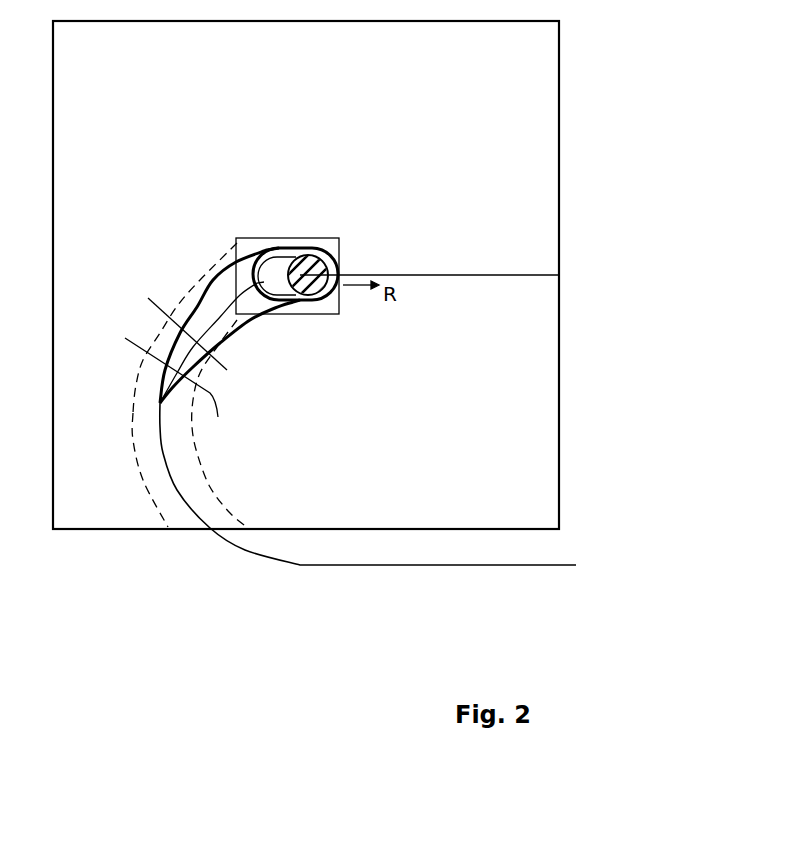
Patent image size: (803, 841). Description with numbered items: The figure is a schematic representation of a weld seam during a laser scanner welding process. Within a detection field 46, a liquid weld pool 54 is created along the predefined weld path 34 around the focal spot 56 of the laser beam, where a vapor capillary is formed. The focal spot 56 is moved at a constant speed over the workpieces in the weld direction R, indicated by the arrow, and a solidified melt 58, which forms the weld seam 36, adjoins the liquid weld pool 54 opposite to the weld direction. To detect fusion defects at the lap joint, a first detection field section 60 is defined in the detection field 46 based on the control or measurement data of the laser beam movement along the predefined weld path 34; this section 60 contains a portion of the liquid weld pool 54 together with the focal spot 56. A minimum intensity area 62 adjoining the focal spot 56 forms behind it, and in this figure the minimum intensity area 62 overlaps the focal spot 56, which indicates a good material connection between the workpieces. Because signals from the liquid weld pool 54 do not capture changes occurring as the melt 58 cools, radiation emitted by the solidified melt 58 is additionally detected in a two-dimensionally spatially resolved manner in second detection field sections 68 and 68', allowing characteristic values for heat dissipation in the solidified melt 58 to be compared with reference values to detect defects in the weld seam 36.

The detection field 46 is at (544, 126).
The predefined weld path 34 is at (430, 275).
The first detection field section 60 is at (238, 246).
The liquid weld pool 54 is at (196, 313).
The minimum intensity area 62 is at (279, 268).
The focal spot 56 is at (313, 244).
The solidified melt 58 is at (147, 372).
The weld seam 36 is at (136, 452).
The second detection field section 68 is at (208, 336).
The second detection field section 68' is at (182, 388).